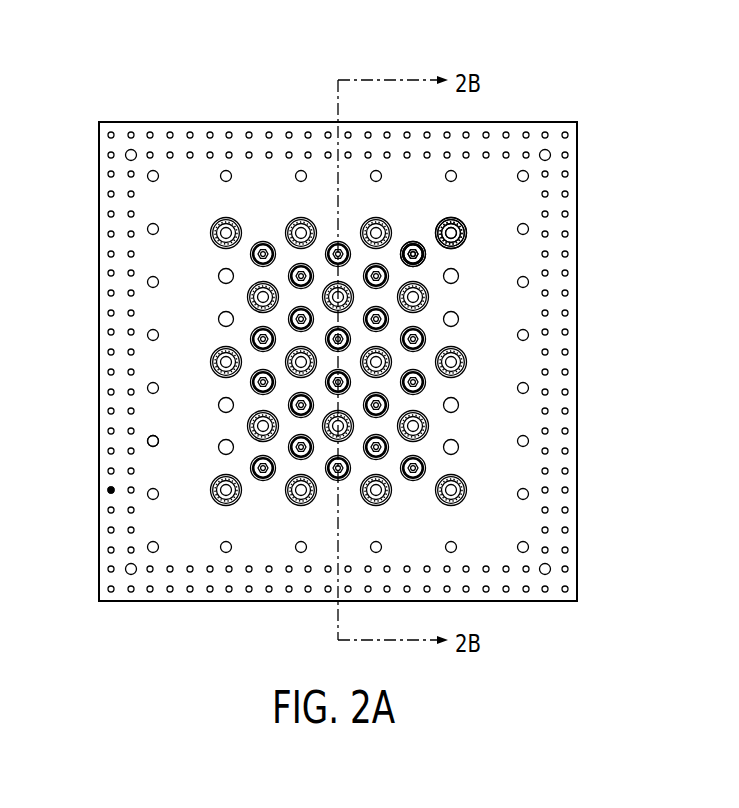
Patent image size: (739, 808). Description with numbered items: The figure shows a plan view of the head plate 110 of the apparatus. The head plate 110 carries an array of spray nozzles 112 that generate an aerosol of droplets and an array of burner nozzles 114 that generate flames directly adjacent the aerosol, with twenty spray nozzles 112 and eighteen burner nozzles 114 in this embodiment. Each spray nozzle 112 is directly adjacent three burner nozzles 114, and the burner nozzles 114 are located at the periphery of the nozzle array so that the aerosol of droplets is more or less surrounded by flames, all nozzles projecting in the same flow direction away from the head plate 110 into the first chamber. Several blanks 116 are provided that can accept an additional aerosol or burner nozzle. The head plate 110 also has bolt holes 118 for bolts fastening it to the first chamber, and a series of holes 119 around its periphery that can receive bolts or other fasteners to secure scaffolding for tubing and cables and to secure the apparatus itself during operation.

The head plate 110 is at (558, 88).
The spray nozzles 112 is at (427, 255).
The burner nozzles 114 is at (467, 231).
The blanks 116 is at (218, 276).
The bolt holes 118 is at (148, 439).
The holes 119 is at (110, 490).